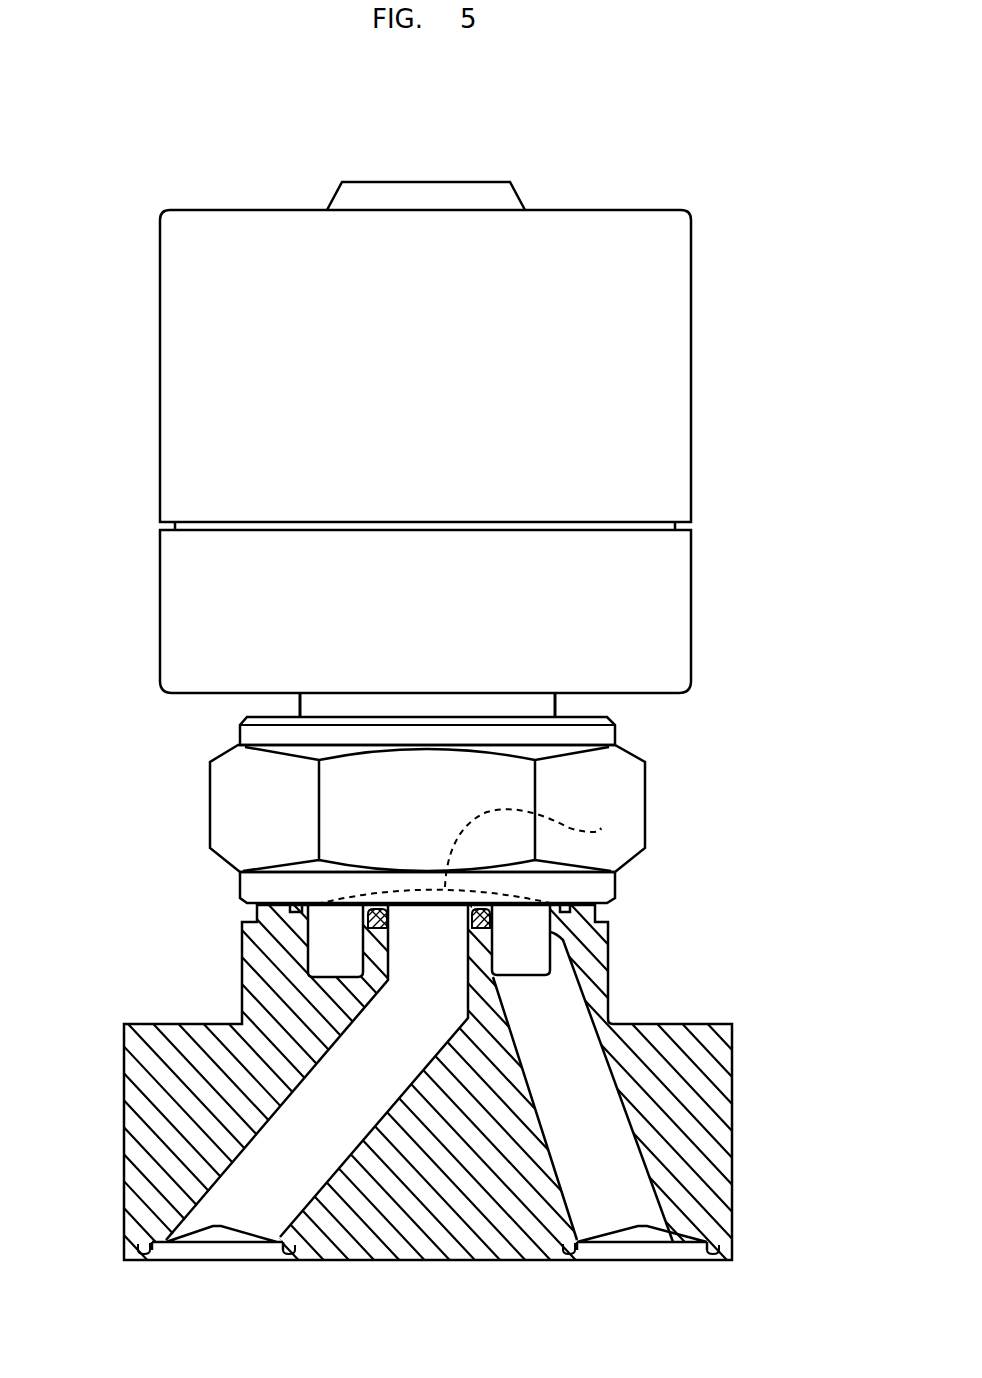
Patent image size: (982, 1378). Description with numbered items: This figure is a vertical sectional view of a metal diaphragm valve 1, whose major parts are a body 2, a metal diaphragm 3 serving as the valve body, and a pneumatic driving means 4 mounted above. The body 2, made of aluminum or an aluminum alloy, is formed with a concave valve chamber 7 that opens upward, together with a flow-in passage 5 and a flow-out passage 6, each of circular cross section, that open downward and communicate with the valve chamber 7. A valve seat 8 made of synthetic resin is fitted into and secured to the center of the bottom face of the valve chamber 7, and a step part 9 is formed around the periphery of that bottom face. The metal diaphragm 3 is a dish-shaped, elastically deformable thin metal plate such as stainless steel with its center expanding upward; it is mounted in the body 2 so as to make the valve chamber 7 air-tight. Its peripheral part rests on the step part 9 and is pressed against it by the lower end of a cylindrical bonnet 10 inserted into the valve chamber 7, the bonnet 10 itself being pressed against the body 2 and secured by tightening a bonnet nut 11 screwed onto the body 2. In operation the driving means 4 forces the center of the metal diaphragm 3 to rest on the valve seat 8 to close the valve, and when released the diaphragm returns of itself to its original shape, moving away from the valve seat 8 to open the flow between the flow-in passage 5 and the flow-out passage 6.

The metal diaphragm valve 1 is at (491, 760).
The body 2 is at (192, 1086).
The metal diaphragm 3 is at (600, 828).
The driving means 4 is at (692, 374).
The flow-in passage 5 is at (222, 1252).
The flow-out passage 6 is at (642, 1252).
The valve chamber 7 is at (330, 947).
The valve seat 8 is at (386, 914).
The step part 9 is at (558, 902).
The bonnet 10 is at (313, 707).
The bonnet nut 11 is at (256, 814).